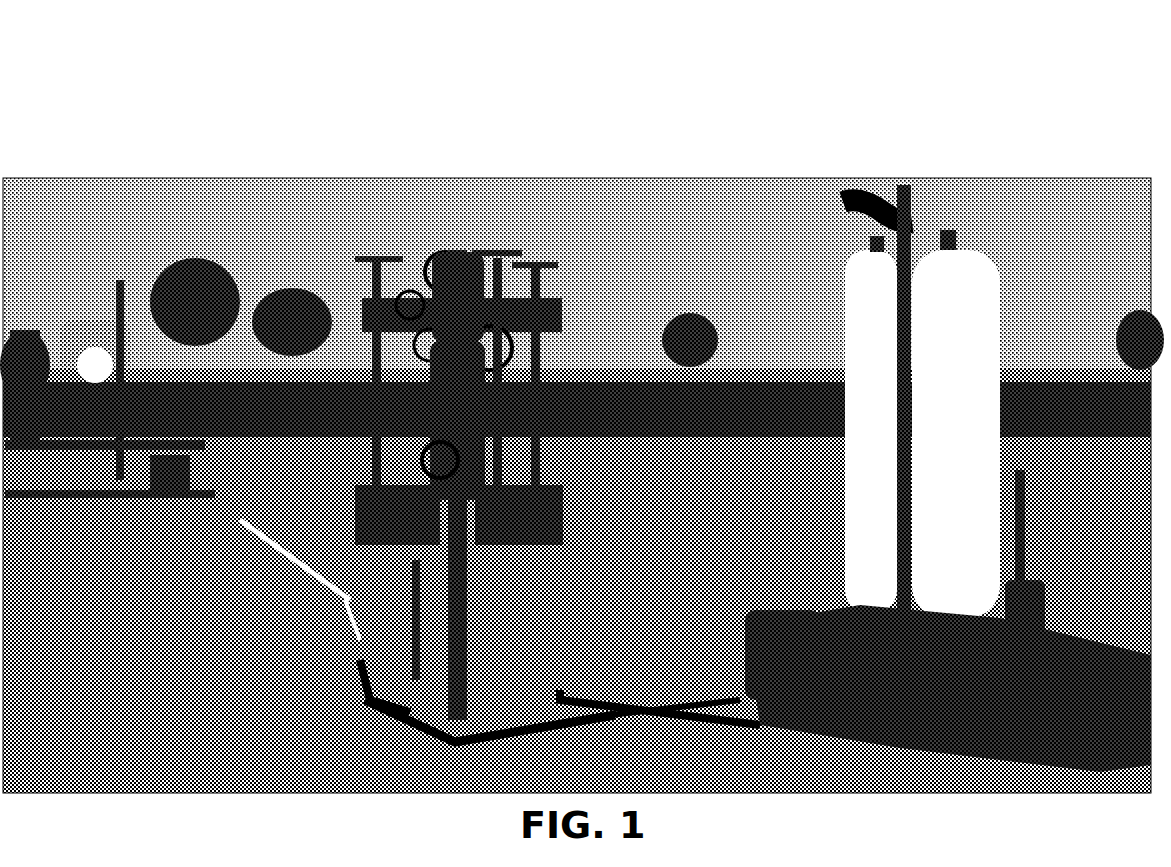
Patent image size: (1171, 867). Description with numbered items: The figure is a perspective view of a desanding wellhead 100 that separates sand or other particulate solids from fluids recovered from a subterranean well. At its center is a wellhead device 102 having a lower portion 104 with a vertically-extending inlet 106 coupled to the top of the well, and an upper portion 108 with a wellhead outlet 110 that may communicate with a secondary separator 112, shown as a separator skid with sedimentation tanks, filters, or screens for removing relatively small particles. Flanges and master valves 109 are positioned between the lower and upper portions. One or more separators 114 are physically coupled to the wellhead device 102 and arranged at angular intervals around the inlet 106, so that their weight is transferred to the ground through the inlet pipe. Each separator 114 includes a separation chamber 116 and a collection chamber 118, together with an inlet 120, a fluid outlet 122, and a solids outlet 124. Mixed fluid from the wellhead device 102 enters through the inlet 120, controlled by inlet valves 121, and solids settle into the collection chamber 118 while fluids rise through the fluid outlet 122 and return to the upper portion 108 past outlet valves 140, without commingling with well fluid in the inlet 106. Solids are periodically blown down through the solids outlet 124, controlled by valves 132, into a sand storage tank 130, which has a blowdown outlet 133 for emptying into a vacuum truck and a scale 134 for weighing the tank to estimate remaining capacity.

The desanding wellhead 100 is at (824, 74).
The wellhead device 102 is at (414, 194).
The lower portion 104 is at (340, 636).
The inlet 106 is at (370, 686).
The upper portion 108 is at (300, 460).
The master valves 109 is at (503, 414).
The wellhead outlet 110 is at (384, 485).
The secondary separator 112 is at (99, 266).
The separators 114 is at (355, 540).
The separation chamber 116 is at (355, 486).
The collection chamber 118 is at (330, 604).
The inlet 120 is at (440, 470).
The inlet valves 121 is at (352, 575).
The fluid outlet 122 is at (370, 460).
The solids outlet 124 is at (350, 678).
The sand storage tank 130 is at (842, 305).
The valves 132 is at (365, 730).
The blowdown outlet 133 is at (800, 584).
The scale 134 is at (1050, 640).
The outlet valves 140 is at (392, 262).